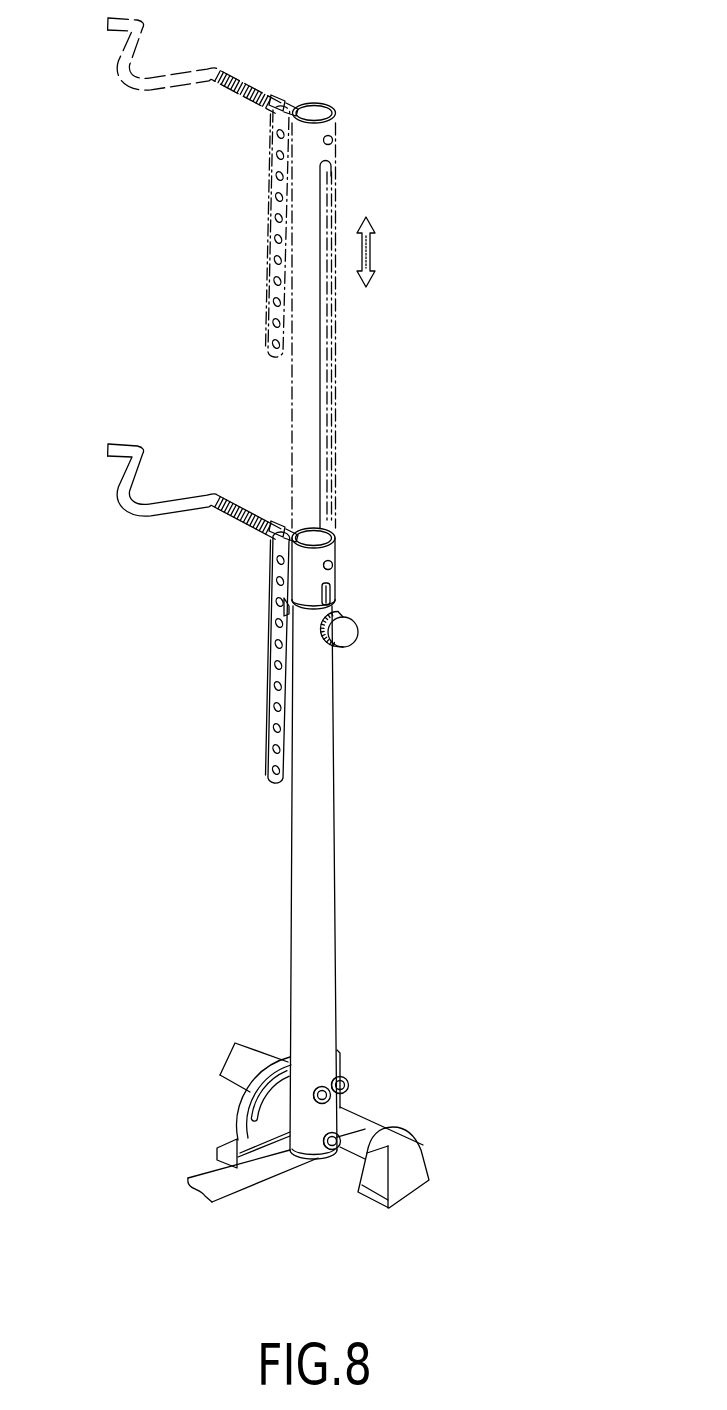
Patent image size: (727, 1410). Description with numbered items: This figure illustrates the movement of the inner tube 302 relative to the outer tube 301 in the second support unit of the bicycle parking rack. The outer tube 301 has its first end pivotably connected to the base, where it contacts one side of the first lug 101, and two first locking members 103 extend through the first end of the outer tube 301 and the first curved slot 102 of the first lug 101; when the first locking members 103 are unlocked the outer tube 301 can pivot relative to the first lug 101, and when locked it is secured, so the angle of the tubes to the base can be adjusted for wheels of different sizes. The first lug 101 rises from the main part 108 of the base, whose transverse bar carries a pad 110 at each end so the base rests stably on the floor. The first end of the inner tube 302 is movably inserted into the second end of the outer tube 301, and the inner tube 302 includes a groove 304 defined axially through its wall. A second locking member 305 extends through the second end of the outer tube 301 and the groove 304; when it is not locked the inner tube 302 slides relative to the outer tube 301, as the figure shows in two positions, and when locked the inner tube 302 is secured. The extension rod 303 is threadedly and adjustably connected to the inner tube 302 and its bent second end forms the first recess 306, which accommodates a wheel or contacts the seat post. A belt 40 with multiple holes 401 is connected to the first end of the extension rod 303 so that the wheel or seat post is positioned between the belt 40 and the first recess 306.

The outer tube 301 is at (332, 848).
The inner tube 302 is at (336, 118).
The extension rod 303 is at (232, 515).
The groove 304 is at (333, 590).
The second locking member 305 is at (343, 637).
The first recess 306 is at (170, 458).
The belt 40 is at (272, 642).
The holes 401 is at (274, 712).
The first lug 101 is at (252, 1143).
The first curved slot 102 is at (253, 1092).
The first locking members 103 is at (348, 1084).
The main part 108 is at (357, 1118).
The pad 110 is at (418, 1182).